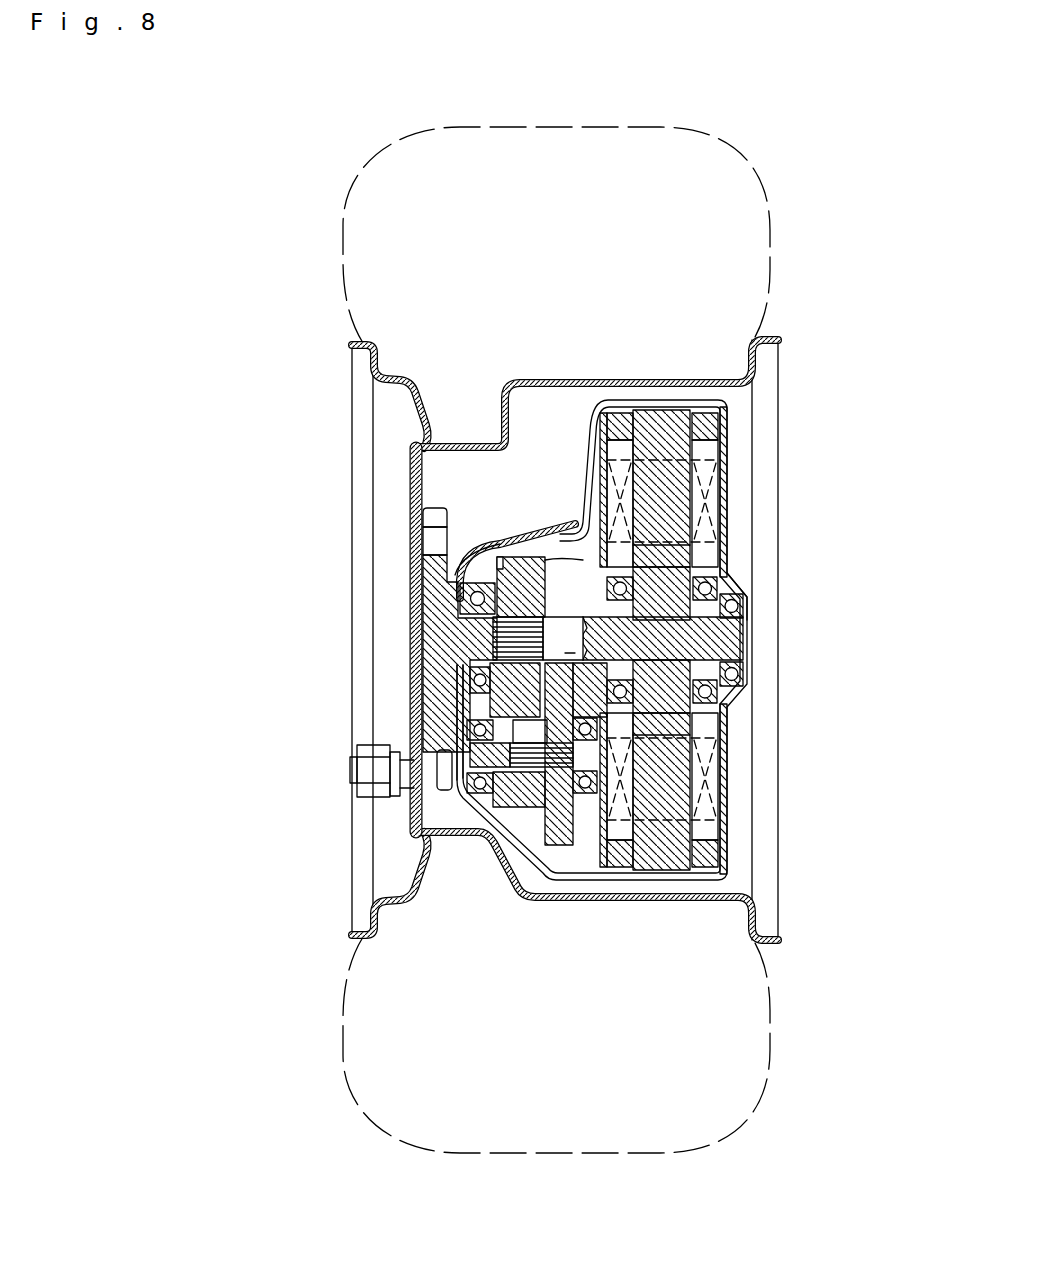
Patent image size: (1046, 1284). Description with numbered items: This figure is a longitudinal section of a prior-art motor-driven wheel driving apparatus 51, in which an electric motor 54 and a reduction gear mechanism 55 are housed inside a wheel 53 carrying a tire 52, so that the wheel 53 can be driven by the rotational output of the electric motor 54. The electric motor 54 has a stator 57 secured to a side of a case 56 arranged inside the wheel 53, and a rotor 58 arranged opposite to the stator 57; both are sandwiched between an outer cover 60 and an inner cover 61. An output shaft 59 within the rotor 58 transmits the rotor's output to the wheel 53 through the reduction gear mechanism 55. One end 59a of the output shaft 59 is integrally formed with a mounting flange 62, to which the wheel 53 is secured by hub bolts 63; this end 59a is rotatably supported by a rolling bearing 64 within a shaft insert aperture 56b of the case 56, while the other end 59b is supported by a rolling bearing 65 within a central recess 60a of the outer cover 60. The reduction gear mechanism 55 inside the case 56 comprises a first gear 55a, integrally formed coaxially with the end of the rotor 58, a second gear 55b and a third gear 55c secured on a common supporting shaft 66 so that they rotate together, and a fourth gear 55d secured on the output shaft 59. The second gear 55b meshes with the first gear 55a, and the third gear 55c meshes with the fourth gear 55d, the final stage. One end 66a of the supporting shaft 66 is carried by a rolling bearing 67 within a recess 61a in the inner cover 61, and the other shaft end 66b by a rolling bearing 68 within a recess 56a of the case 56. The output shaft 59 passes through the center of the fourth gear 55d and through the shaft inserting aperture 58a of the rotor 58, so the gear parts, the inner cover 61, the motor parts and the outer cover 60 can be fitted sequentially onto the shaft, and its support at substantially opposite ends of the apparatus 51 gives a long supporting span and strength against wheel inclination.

The motor-driven wheel driving apparatus 51 is at (812, 373).
The tire 52 is at (773, 240).
The wheel 53 is at (595, 615).
The electric motor 54 is at (733, 464).
The reduction gear mechanism 55 is at (520, 711).
The first gear 55a is at (556, 612).
The second gear 55b is at (552, 848).
The third gear 55c is at (530, 832).
The fourth gear 55d is at (488, 541).
The case 56 is at (521, 606).
The recess 56a is at (452, 735).
The shaft insert aperture 56b is at (452, 585).
The stator 57 is at (652, 404).
The rotor 58 is at (627, 547).
The shaft inserting aperture 58a is at (729, 715).
The output shaft 59 is at (573, 651).
The one end of output shaft 59a is at (462, 636).
The other end of output shaft 59b is at (725, 678).
The outer cover 60 is at (728, 438).
The central recess 60a is at (742, 590).
The inner cover 61 is at (600, 572).
The recess 61a is at (598, 848).
The mounting flange 62 is at (430, 808).
The hub bolts 63 is at (450, 837).
The rolling bearing 64 is at (466, 604).
The rolling bearing 65 is at (735, 607).
The supporting shaft 66 is at (451, 794).
The one end of supporting shaft 66a is at (580, 795).
The other shaft end 66b is at (466, 730).
The rolling bearing 67 is at (650, 830).
The rolling bearing 68 is at (481, 806).